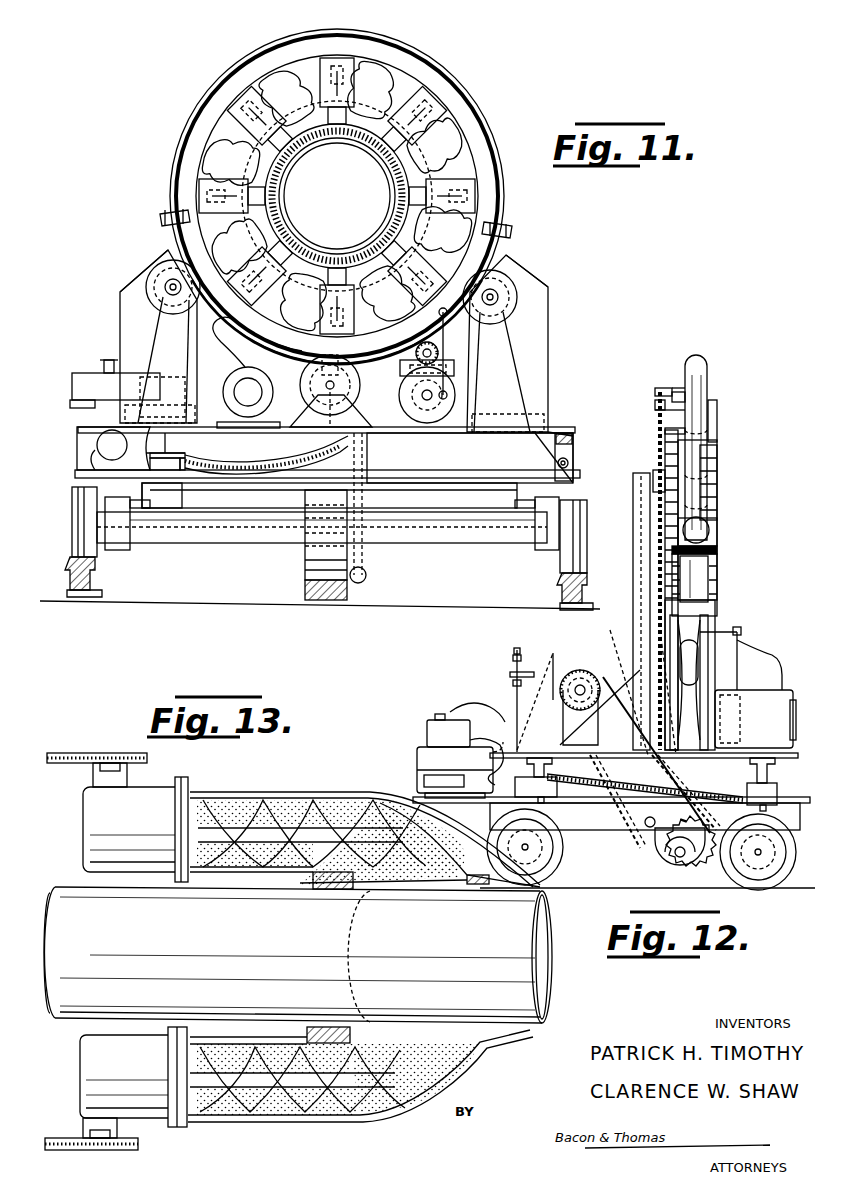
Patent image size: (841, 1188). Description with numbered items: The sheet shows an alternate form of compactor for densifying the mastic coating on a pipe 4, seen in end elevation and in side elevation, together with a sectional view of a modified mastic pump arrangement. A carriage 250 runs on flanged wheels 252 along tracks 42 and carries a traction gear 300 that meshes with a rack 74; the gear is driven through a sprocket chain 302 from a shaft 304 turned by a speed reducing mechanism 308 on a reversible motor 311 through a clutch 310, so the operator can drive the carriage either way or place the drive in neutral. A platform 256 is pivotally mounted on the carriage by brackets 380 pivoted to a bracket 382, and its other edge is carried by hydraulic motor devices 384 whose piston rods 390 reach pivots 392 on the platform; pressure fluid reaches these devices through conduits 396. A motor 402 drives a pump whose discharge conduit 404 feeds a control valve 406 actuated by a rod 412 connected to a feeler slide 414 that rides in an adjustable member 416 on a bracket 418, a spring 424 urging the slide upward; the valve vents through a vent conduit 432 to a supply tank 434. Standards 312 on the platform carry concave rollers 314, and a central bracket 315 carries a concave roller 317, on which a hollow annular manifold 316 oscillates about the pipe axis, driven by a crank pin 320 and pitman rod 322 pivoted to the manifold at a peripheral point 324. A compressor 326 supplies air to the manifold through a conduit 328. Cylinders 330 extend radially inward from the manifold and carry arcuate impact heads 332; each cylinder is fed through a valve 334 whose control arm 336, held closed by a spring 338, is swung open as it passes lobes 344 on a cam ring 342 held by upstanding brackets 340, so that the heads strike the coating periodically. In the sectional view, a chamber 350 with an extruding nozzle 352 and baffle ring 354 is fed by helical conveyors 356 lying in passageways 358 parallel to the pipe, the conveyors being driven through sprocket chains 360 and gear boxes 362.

In FIG. 11, the pipe 4 is at (336, 140).
In FIG. 13, the pipe 4 is at (550, 917).
In FIG. 11, the tracks 42 is at (88, 583).
In FIG. 12, the tracks 42 is at (590, 888).
In FIG. 11, the rack 74 is at (304, 587).
In FIG. 11, the carriage 250 is at (436, 491).
In FIG. 12, the carriage 250 is at (784, 814).
In FIG. 11, the flanged wheels 252 is at (587, 512).
In FIG. 12, the flanged wheels 252 is at (553, 852).
In FIG. 11, the platform 256 is at (566, 433).
In FIG. 11, the traction gear 300 is at (304, 573).
In FIG. 12, the traction gear 300 is at (707, 414).
In FIG. 11, the sprocket chain 302 is at (371, 454).
In FIG. 12, the sprocket chain 302 is at (670, 788).
In FIG. 11, the shaft 304 is at (355, 345).
In FIG. 12, the shaft 304 is at (575, 669).
In FIG. 11, the speed reducing mechanism 308 is at (446, 348).
In FIG. 12, the speed reducing mechanism 308 is at (606, 675).
In FIG. 11, the clutch 310 is at (362, 405).
In FIG. 11, the motor 311 is at (456, 387).
In FIG. 11, the standards 312 is at (150, 306).
In FIG. 12, the standards 312 is at (625, 643).
In FIG. 11, the concave rollers 314 is at (160, 261).
In FIG. 12, the concave rollers 314 is at (710, 587).
In FIG. 11, the central bracket 315 is at (315, 397).
In FIG. 11, the annular manifold 316 is at (425, 72).
In FIG. 12, the annular manifold 316 is at (700, 358).
In FIG. 11, the concave roller 317 is at (326, 381).
In FIG. 12, the concave roller 317 is at (703, 724).
In FIG. 11, the crank pin 320 is at (456, 379).
In FIG. 12, the crank pin 320 is at (747, 719).
In FIG. 11, the pitman rod 322 is at (446, 318).
In FIG. 12, the pitman rod 322 is at (744, 641).
In FIG. 11, the pivotal connection 324 is at (343, 196).
In FIG. 12, the pivotal connection 324 is at (724, 633).
In FIG. 11, the motor driven compressor 326 is at (234, 395).
In FIG. 12, the motor driven compressor 326 is at (784, 693).
In FIG. 11, the conduit 328 is at (255, 342).
In FIG. 12, the conduit 328 is at (759, 664).
In FIG. 11, the cylinders 330 is at (338, 95).
In FIG. 12, the cylinders 330 is at (707, 521).
In FIG. 11, the impact head 332 is at (348, 122).
In FIG. 12, the impact head 332 is at (719, 487).
In FIG. 11, the valve 334 is at (338, 40).
In FIG. 12, the valve 334 is at (672, 388).
In FIG. 12, the control arm 336 is at (657, 388).
In FIG. 12, the spring 338 is at (658, 404).
In FIG. 11, the upstanding brackets 340 is at (133, 292).
In FIG. 12, the upstanding brackets 340 is at (636, 564).
In FIG. 11, the cam ring 342 is at (258, 163).
In FIG. 12, the cam ring 342 is at (663, 432).
In FIG. 11, the lobes 344 is at (300, 63).
In FIG. 12, the lobes 344 is at (655, 411).
In FIG. 13, the chamber 350 is at (414, 853).
In FIG. 13, the extruding nozzle 352 is at (472, 878).
In FIG. 13, the baffle ring 354 is at (325, 892).
In FIG. 13, the helical conveyors 356 is at (300, 798).
In FIG. 13, the passageways 358 is at (242, 794).
In FIG. 13, the sprocket chains 360 is at (54, 753).
In FIG. 13, the gear boxes 362 is at (164, 787).
In FIG. 11, the brackets 380 is at (548, 456).
In FIG. 12, the brackets 380 is at (616, 756).
In FIG. 11, the bracket 382 is at (555, 476).
In FIG. 12, the bracket 382 is at (660, 819).
In FIG. 11, the hydraulic motor devices 384 is at (162, 495).
In FIG. 12, the hydraulic motor devices 384 is at (553, 800).
In FIG. 11, the piston rod 390 is at (185, 453).
In FIG. 12, the piston rod 390 is at (545, 769).
In FIG. 11, the pivot 392 is at (178, 426).
In FIG. 12, the pivot 392 is at (775, 748).
In FIG. 11, the conduit 396 is at (259, 461).
In FIG. 12, the conduit 396 is at (644, 778).
In FIG. 11, the motor 402 is at (79, 458).
In FIG. 12, the motor 402 is at (420, 760).
In FIG. 11, the discharge conduit 404 is at (127, 395).
In FIG. 12, the control valve 406 is at (514, 734).
In FIG. 12, the rod 412 is at (510, 676).
In FIG. 12, the feeler slide 414 is at (518, 655).
In FIG. 12, the member 416 is at (535, 694).
In FIG. 12, the bracket 418 is at (555, 652).
In FIG. 12, the spring 424 is at (513, 652).
In FIG. 11, the vent conduit 432 is at (110, 363).
In FIG. 12, the vent conduit 432 is at (474, 712).
In FIG. 11, the supply tank 434 is at (85, 375).
In FIG. 12, the supply tank 434 is at (430, 721).